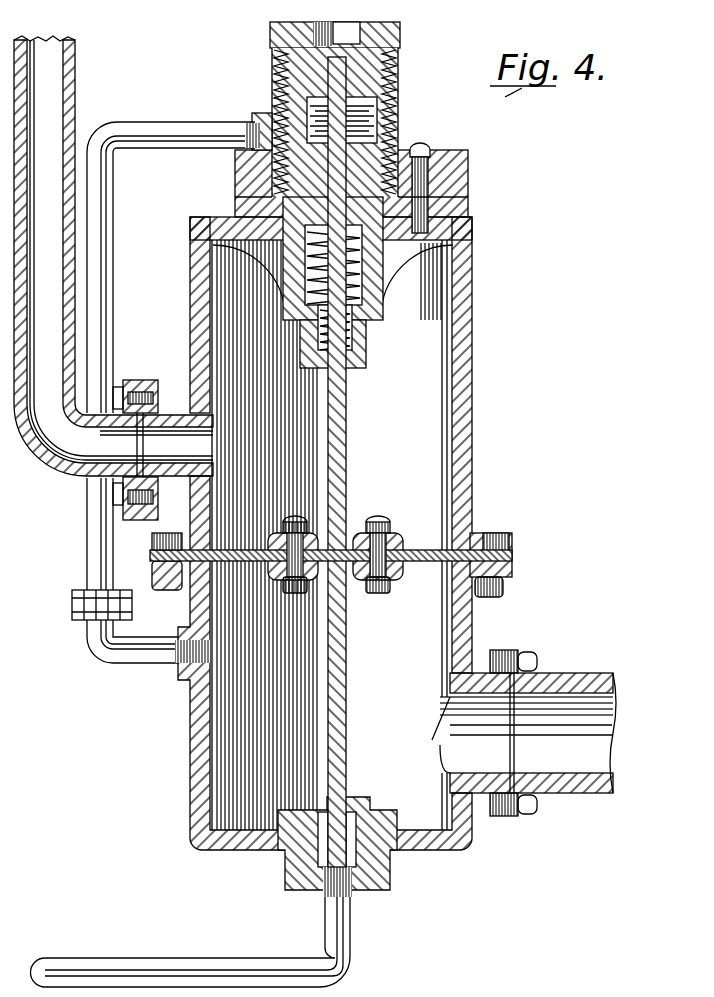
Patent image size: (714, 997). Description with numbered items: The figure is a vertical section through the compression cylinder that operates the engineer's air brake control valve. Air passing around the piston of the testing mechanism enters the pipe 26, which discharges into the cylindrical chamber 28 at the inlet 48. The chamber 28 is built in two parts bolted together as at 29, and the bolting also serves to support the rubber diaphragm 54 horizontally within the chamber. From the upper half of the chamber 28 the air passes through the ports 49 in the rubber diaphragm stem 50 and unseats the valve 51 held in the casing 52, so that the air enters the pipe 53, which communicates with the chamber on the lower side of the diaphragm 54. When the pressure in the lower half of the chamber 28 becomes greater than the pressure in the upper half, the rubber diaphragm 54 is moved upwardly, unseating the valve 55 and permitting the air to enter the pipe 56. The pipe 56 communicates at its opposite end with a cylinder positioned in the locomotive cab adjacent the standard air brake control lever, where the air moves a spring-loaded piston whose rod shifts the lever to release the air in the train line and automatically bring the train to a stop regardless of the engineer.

The pipe 26 is at (75, 65).
The cylindrical chamber 28 is at (473, 374).
The bolts 29 is at (513, 547).
The inlet 48 is at (133, 381).
The ports 49 is at (311, 366).
The rubber diaphragm stem 50 is at (347, 393).
The valve 51 is at (375, 158).
The casing 52 is at (399, 85).
The pipe 53 is at (104, 297).
The diaphragm 54 is at (416, 550).
The valve 55 is at (362, 798).
The pipe 56 is at (104, 961).